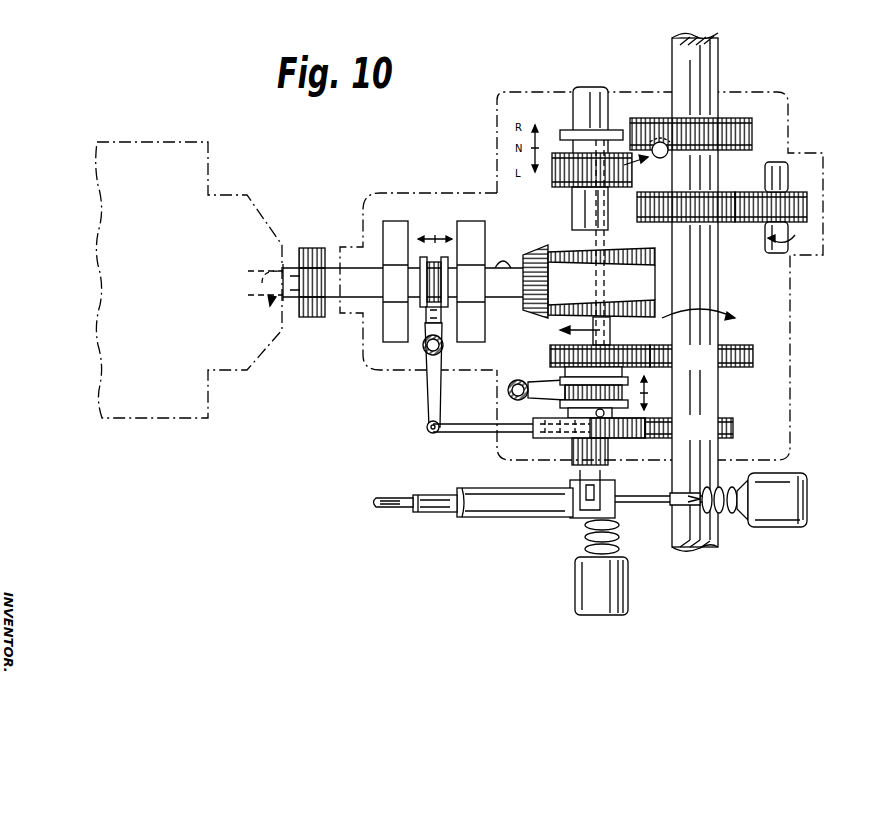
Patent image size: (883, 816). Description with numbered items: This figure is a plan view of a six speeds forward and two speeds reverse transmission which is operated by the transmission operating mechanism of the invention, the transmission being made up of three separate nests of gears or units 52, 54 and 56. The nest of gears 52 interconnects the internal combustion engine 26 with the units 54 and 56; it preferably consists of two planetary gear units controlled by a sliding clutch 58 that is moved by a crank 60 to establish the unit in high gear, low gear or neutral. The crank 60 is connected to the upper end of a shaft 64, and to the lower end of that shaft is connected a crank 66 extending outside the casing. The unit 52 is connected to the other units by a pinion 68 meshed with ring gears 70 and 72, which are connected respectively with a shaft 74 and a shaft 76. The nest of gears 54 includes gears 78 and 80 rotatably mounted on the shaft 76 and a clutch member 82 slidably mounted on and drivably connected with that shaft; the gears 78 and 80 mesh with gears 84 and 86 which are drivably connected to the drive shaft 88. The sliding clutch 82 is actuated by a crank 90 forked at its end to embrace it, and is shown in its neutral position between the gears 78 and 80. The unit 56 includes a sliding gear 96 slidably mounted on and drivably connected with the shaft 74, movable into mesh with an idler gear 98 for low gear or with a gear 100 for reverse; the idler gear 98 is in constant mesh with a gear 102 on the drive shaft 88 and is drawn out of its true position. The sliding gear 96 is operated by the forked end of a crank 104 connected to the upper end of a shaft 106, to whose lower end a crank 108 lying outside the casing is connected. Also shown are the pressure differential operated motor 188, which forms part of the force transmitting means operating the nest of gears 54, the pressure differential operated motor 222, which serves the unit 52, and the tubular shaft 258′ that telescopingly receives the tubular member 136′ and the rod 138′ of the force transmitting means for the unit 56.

The internal combustion engine 26 is at (110, 150).
The transmission unit 52 is at (428, 208).
The nest of gears 54 is at (632, 373).
The nest of gears 56 is at (745, 163).
The sliding clutch 58 is at (425, 285).
The crank 60 is at (428, 327).
The shaft 64 is at (445, 348).
The crank 66 is at (432, 397).
The pinion 68 is at (504, 300).
The ring gear 70 is at (568, 252).
The ring gear 72 is at (558, 307).
The shaft 74 is at (575, 204).
The shaft 76 is at (603, 326).
The gear 78 is at (553, 355).
The gear 80 is at (545, 440).
The clutch member 82 is at (615, 415).
The gear 84 is at (740, 345).
The gear 86 is at (735, 432).
The drive shaft 88 is at (707, 58).
The crank 90 is at (540, 397).
The sliding gear 96 is at (552, 180).
The idler gear 98 is at (803, 202).
The gear 100 is at (727, 120).
The gear 102 is at (731, 220).
The crank 104 is at (603, 145).
The shaft 106 is at (657, 120).
The crank 108 is at (642, 165).
The tubular member 136′ is at (433, 512).
The rod 138′ is at (386, 505).
The pressure differential operated motor 188 is at (625, 597).
The pressure differential operated motor 222 is at (780, 482).
The tubular shaft 258′ is at (506, 518).